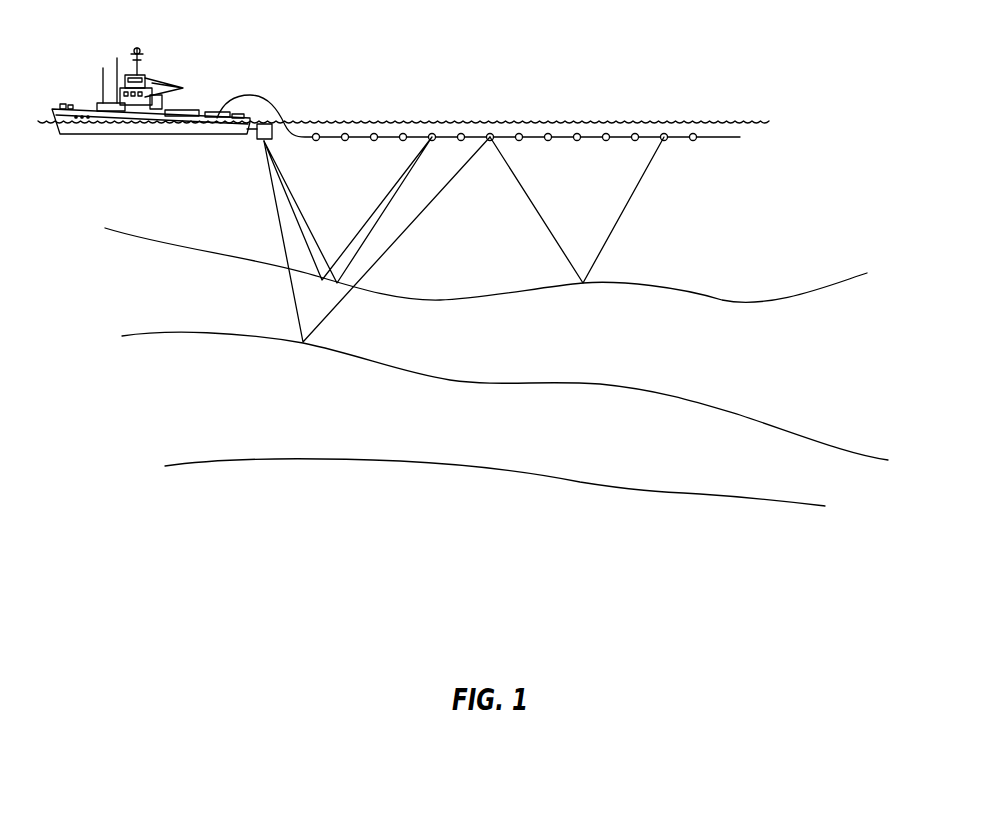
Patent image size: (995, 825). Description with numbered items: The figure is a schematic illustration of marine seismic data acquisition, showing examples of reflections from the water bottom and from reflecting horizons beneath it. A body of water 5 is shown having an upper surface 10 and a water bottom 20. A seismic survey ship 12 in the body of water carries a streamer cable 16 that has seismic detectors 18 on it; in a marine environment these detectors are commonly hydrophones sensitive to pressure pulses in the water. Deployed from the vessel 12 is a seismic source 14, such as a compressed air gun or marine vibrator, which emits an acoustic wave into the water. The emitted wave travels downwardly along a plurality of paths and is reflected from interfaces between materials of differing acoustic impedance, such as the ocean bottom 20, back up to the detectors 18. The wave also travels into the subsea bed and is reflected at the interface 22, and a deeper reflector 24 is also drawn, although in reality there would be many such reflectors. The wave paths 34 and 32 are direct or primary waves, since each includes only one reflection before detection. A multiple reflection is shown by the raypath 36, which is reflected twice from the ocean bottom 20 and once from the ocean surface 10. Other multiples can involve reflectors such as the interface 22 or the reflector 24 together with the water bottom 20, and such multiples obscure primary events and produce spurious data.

The body of water 5 is at (822, 212).
The upper surface 10 is at (750, 118).
The seismic survey ship 12 is at (142, 65).
The seismic source 14 is at (257, 137).
The streamer cable 16 is at (443, 136).
The seismic detectors 18 is at (577, 136).
The water bottom 20 is at (722, 300).
The interface 22 is at (720, 408).
The reflector 24 is at (685, 492).
The wave path 32 is at (275, 212).
The wave path 34 is at (290, 208).
The raypath 36 is at (626, 207).